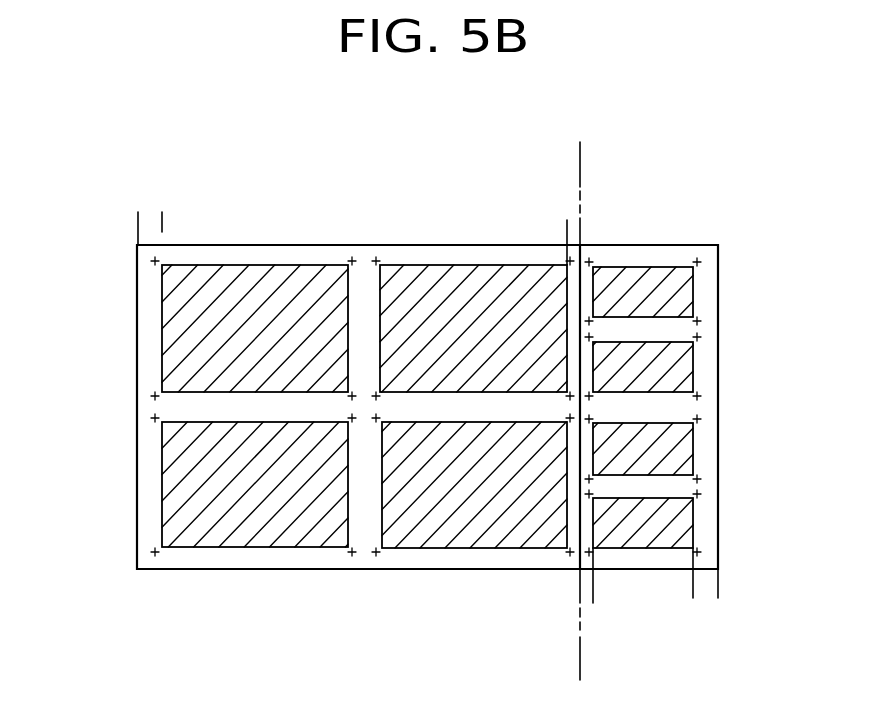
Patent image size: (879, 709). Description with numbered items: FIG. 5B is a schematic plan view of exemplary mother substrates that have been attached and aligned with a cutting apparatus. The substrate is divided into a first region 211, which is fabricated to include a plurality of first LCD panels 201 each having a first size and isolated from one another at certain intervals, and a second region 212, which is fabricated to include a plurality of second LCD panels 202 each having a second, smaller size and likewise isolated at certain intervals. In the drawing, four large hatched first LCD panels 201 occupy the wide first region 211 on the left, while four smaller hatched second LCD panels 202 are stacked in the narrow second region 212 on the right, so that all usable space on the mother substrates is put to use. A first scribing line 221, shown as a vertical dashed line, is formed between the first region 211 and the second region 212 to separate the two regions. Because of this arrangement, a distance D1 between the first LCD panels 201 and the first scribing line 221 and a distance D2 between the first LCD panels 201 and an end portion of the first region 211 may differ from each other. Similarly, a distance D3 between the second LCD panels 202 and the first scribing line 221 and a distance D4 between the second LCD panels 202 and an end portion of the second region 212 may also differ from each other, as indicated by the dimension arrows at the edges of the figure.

The first LCD panels 201 is at (258, 300).
The second LCD panels 202 is at (686, 367).
The first region 211 is at (137, 577).
The second region 212 is at (718, 243).
The first scribing line 221 is at (580, 153).
The distance D1 is at (613, 227).
The distance D2 is at (103, 220).
The distance D3 is at (545, 598).
The distance D4 is at (660, 593).